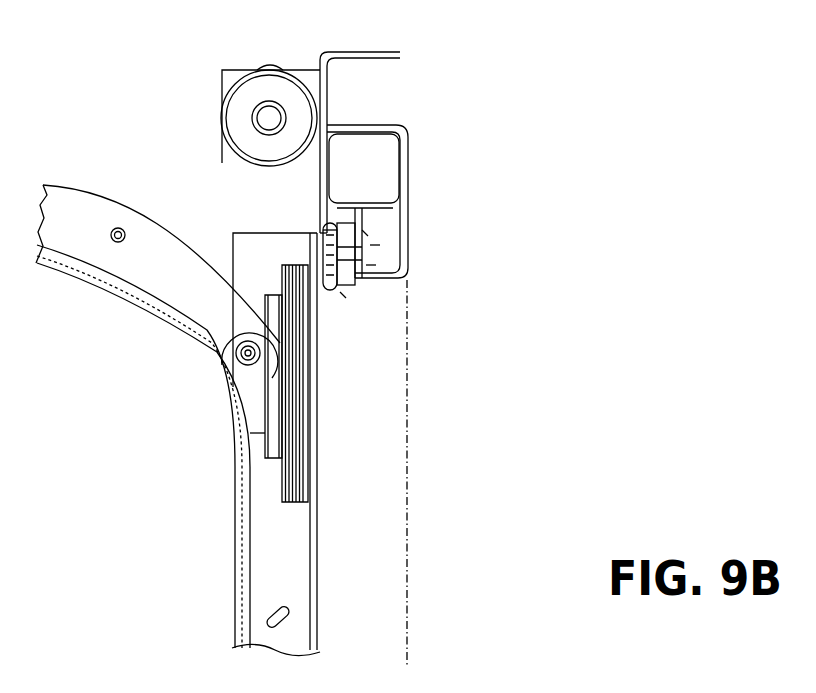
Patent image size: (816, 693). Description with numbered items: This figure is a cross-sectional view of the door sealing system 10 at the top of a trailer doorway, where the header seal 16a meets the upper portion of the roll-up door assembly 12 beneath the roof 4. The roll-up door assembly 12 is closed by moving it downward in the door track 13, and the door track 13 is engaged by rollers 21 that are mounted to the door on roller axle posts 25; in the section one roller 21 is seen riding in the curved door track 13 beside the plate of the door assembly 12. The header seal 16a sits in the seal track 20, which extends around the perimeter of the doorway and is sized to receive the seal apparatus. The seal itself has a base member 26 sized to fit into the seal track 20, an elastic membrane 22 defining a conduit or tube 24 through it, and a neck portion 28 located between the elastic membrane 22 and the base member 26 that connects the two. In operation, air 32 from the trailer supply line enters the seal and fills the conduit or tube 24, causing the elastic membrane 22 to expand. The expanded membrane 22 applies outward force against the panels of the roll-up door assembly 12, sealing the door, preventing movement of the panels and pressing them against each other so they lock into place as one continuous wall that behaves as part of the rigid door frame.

The door sealing system 10 is at (113, 72).
The roof 4 is at (347, 48).
The door track 13 is at (107, 197).
The roll-up door assembly 12 is at (247, 232).
The rollers 21 is at (215, 343).
The roller axle posts 25 is at (228, 360).
The seal track 20 is at (377, 283).
The elastic membrane 22 is at (332, 223).
The air 32 is at (320, 232).
The neck portion 28 is at (368, 233).
The conduit or tube 24 is at (375, 245).
The base member 26 is at (372, 265).
The header seal 16a is at (343, 295).